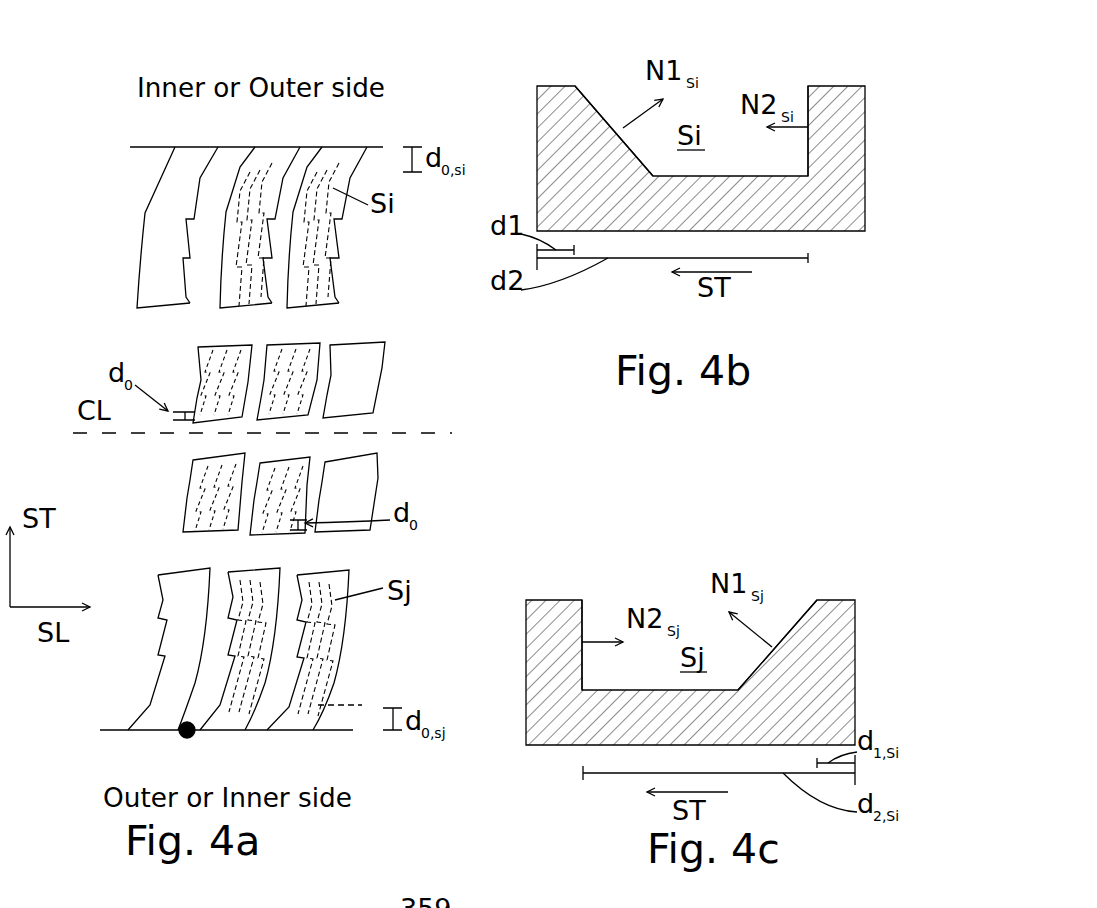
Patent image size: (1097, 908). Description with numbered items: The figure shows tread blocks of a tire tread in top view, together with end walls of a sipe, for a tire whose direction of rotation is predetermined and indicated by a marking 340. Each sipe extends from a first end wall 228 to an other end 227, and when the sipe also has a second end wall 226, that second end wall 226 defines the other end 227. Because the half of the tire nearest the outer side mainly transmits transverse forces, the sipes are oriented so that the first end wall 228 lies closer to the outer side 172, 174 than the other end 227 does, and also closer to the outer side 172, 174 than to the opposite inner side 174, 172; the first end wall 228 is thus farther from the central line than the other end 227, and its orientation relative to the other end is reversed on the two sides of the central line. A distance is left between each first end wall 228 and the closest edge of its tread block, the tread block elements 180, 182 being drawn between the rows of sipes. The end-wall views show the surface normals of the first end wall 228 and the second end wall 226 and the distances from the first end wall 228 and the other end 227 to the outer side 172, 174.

In FIG. 4a, the outer side 172 is at (120, 730).
In FIG. 4c, the outer side 172 is at (890, 650).
In FIG. 4a, the inner side 174 is at (153, 147).
In FIG. 4b, the inner side 174 is at (529, 125).
In FIG. 4a, the surface structure element 180 is at (332, 337).
In FIG. 4a, the surface structure element row 182 is at (280, 438).
In FIG. 4a, the second end wall 226 is at (332, 297).
In FIG. 4b, the second end wall 226 is at (800, 96).
In FIG. 4c, the second end wall 226 is at (592, 609).
In FIG. 4a, the other end 227 is at (385, 439).
In FIG. 4a, the first end wall 228 is at (345, 158).
In FIG. 4b, the first end wall 228 is at (605, 96).
In FIG. 4c, the first end wall 228 is at (788, 607).
In FIG. 4a, the marking 340 is at (195, 736).